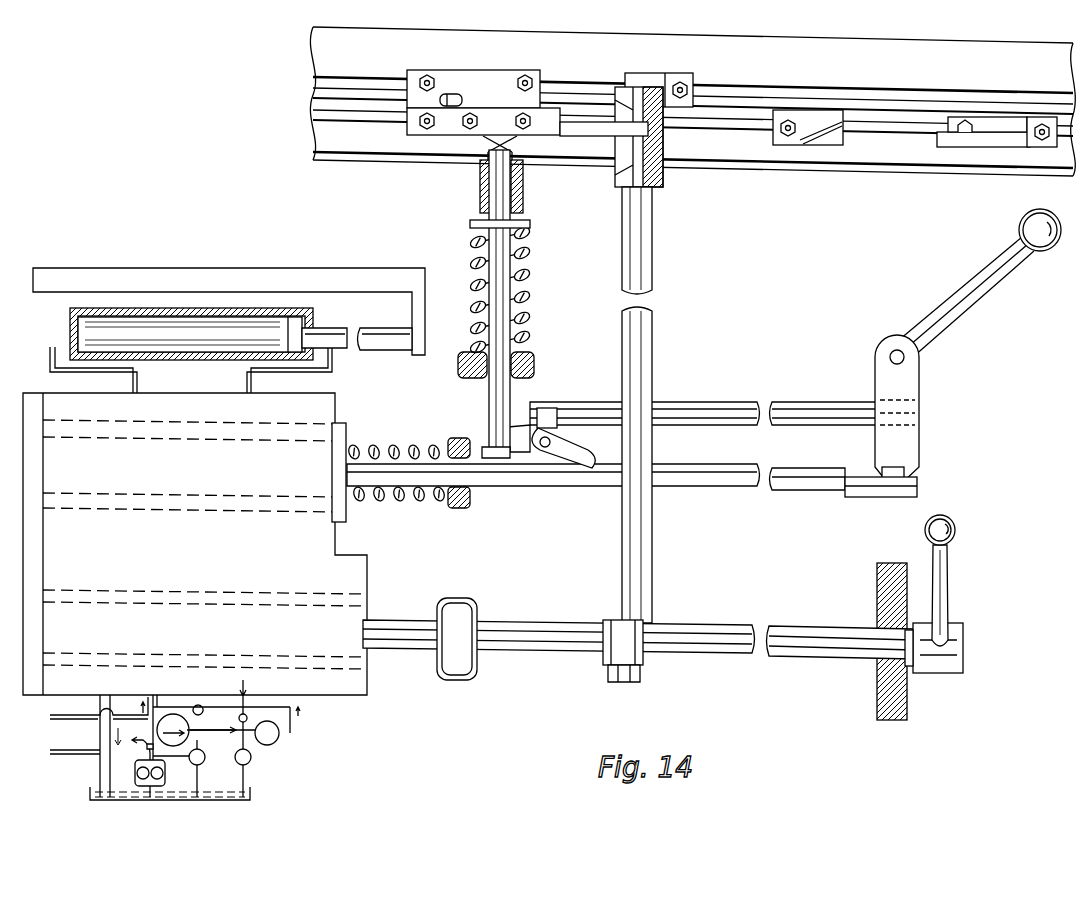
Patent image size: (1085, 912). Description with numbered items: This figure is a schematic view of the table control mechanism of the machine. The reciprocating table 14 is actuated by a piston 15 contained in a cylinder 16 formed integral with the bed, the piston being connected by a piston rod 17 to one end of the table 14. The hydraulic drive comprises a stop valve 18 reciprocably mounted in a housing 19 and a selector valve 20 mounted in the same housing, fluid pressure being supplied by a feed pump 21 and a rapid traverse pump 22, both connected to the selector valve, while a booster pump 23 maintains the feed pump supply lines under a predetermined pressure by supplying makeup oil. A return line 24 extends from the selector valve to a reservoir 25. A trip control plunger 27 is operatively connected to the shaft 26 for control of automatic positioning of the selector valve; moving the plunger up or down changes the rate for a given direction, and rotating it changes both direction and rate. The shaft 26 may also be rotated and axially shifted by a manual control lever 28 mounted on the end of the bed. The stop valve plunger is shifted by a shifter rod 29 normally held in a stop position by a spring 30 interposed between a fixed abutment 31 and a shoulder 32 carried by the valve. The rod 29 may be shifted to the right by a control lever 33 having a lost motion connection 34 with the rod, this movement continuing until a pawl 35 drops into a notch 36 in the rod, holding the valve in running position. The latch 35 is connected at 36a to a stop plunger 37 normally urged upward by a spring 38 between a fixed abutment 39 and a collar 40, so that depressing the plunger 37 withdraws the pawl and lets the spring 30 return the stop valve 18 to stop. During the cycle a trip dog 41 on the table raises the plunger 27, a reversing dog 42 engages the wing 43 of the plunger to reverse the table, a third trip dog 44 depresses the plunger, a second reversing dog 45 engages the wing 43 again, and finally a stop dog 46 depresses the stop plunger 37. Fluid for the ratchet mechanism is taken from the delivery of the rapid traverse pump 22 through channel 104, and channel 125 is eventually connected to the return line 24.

The reciprocating table 14 is at (340, 62).
The piston 15 is at (297, 312).
The cylinder 16 is at (100, 335).
The piston rod 17 is at (373, 340).
The stop valve 18 is at (272, 466).
The housing 19 is at (263, 407).
The selector valve 20 is at (345, 657).
The feed pump 21 is at (270, 744).
The rapid traverse pump 22 is at (150, 762).
The booster pump 23 is at (185, 738).
The return line 24 is at (100, 780).
The reservoir 25 is at (250, 798).
The shaft 26 is at (557, 640).
The trip control plunger 27 is at (655, 270).
The manual control lever 28 is at (938, 575).
The shifter rod 29 is at (712, 482).
The spring 30 is at (395, 500).
The fixed abutment 31 is at (453, 510).
The shoulder 32 is at (347, 435).
The control lever 33 is at (958, 302).
The lost motion connection 34 is at (880, 475).
The pawl 35 is at (597, 455).
The notch 36 is at (530, 467).
The connection 36a is at (537, 410).
The stop plunger 37 is at (493, 393).
The spring 38 is at (523, 297).
The fixed abutment 39 is at (533, 355).
The collar 40 is at (530, 225).
The trip dog 41 is at (795, 140).
The reversing dog 42 is at (963, 147).
The wing 43 is at (662, 147).
The third trip dog 44 is at (640, 80).
The second reversing dog 45 is at (587, 132).
The stop dog 46 is at (487, 152).
The channel 104 is at (79, 712).
The channel 125 is at (56, 753).